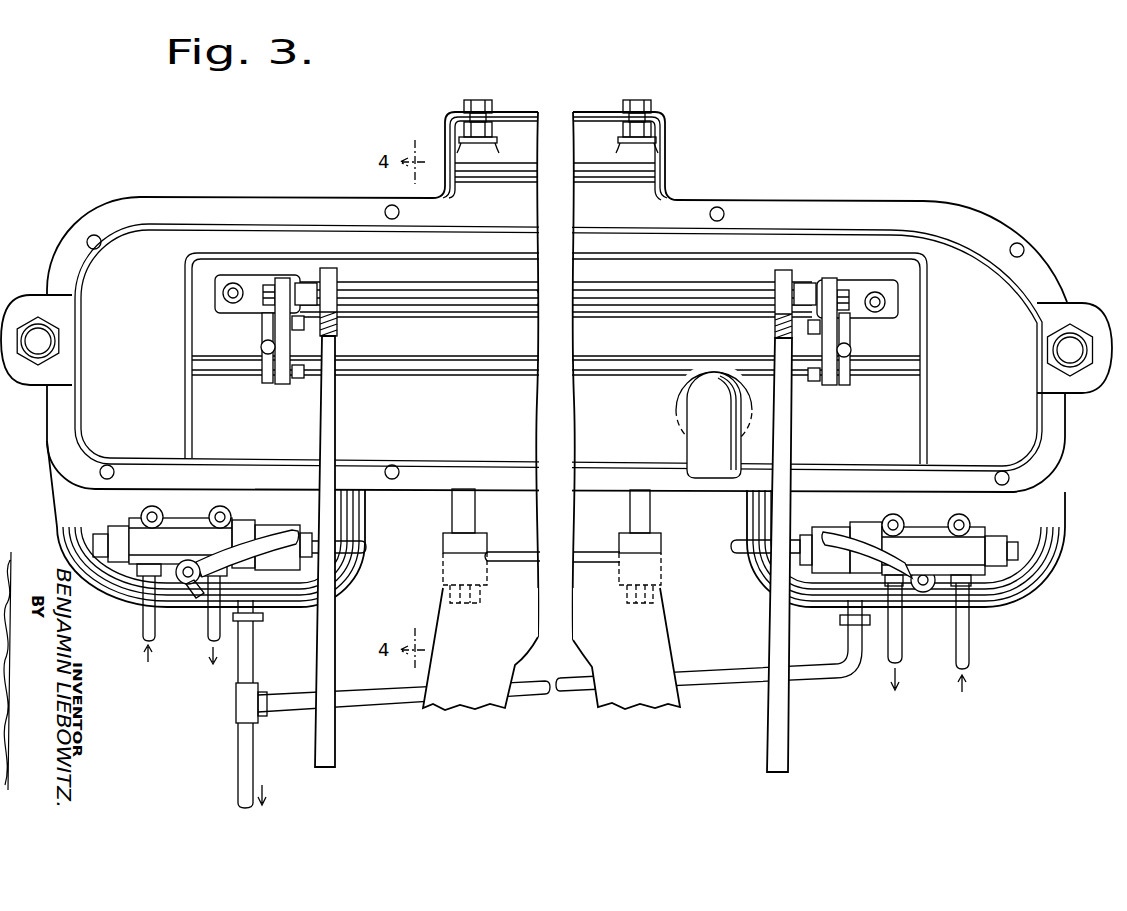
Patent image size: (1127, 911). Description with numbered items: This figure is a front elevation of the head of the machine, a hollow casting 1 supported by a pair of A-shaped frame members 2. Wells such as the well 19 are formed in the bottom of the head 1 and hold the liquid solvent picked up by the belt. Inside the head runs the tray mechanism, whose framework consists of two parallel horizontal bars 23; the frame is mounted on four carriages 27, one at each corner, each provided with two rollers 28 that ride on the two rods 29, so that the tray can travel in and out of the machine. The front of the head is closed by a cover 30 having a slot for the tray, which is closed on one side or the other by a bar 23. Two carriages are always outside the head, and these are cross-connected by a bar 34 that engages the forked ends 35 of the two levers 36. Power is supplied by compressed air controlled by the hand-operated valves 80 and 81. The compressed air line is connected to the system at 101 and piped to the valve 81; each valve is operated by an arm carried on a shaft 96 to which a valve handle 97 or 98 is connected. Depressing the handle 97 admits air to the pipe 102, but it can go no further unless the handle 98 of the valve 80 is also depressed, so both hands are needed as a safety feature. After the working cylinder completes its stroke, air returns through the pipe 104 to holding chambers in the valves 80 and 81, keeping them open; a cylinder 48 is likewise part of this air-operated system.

The hollow casting 1 is at (771, 200).
The A-shaped frame members 2 is at (638, 716).
The well 19 is at (113, 580).
The horizontal bars 23 is at (249, 277).
The carriages 27 is at (284, 384).
The rollers 28 is at (268, 312).
The rods 29 is at (262, 348).
The cover 30 is at (433, 452).
The bar 34 is at (478, 300).
The forked ends 35 is at (333, 268).
The levers 36 is at (335, 413).
The cylinder 48 is at (988, 595).
The hand-operated valve 80 is at (180, 519).
The hand-operated valve 81 is at (931, 527).
The shaft 96 is at (188, 565).
The valve handle 97 is at (830, 536).
The valve handle 98 is at (270, 530).
The compressed air line connection 101 is at (745, 552).
The pipe 102 is at (207, 636).
The pipe 104 is at (142, 635).